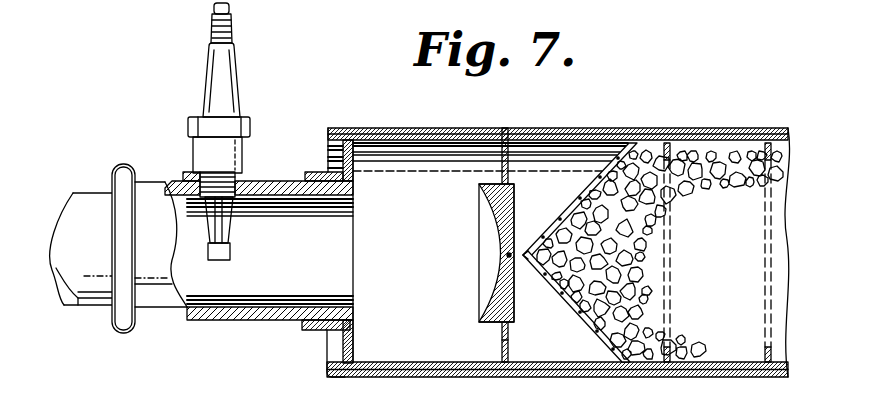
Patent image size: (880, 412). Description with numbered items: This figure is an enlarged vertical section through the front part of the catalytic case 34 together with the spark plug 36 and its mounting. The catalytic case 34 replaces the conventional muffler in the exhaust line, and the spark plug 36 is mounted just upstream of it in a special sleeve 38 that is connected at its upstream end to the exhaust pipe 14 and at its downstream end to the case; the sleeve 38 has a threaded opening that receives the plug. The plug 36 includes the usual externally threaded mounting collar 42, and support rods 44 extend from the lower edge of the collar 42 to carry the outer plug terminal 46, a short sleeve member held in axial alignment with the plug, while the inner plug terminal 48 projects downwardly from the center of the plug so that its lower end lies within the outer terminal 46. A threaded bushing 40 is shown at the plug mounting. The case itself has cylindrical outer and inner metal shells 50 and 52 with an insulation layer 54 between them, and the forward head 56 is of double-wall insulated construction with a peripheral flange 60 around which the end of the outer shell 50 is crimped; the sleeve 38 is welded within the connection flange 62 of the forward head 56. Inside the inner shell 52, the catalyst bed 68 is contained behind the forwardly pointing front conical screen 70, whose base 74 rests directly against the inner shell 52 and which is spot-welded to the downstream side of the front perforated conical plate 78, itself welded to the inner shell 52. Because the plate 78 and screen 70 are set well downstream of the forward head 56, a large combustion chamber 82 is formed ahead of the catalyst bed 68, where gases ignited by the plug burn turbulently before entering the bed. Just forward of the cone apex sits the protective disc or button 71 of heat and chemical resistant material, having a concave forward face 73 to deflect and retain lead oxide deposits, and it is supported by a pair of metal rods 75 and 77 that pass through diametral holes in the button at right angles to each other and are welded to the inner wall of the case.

The exhaust pipe 14 is at (82, 308).
The catalytic case 34 is at (613, 120).
The spark plug 36 is at (241, 93).
The sleeve 38 is at (212, 320).
The threaded bushing 40 is at (238, 178).
The mounting collar 42 is at (205, 180).
The support rods 44 is at (230, 233).
The outer plug terminal 46 is at (235, 258).
The inner plug terminal 48 is at (215, 230).
The outer metal shell 50 is at (505, 130).
The inner metal shell 52 is at (548, 135).
The insulation layer 54 is at (435, 132).
The forward head 56 is at (355, 163).
The peripheral flange 60 is at (345, 135).
The connection flange 62 is at (308, 172).
The catalyst bed 68 is at (650, 215).
The front conical screen 70 is at (531, 262).
The protective disc or button 71 is at (488, 184).
The concave forward face 73 is at (492, 215).
The base 74 is at (632, 362).
The metal rod 75 is at (506, 255).
The metal rod 77 is at (500, 342).
The front perforated conical plate 78 is at (566, 308).
The combustion chamber 82 is at (432, 346).